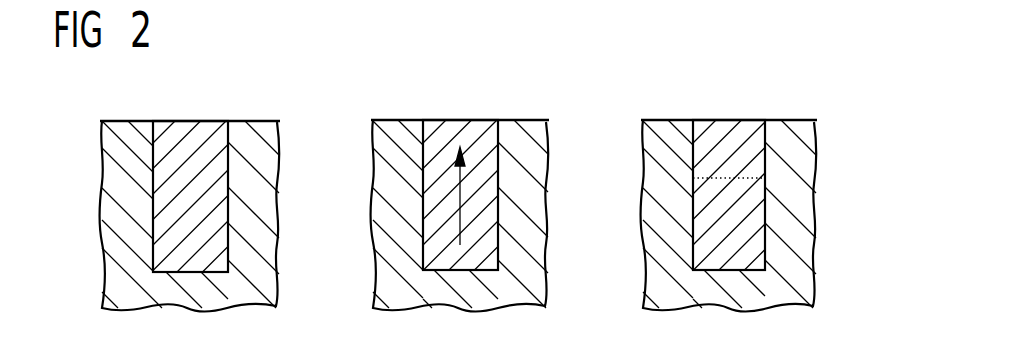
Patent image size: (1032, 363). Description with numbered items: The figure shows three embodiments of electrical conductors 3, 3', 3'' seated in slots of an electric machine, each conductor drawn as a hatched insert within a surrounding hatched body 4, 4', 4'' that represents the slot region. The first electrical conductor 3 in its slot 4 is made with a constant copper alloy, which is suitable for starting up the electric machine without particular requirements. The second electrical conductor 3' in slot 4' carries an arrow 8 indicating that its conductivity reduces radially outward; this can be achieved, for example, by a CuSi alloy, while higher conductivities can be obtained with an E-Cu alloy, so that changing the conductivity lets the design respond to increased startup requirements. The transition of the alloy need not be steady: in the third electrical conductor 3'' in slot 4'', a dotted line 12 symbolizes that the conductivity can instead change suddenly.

The electrical conductor 3 is at (190, 164).
The base body / second material region 4 is at (189, 184).
The electrical conductor 3' is at (460, 163).
The base body (variant) 4' is at (460, 184).
The arrow 8 is at (462, 207).
The electrical conductor 3'' is at (729, 163).
The base body (variant) 4'' is at (733, 184).
The dotted line 12 is at (735, 181).